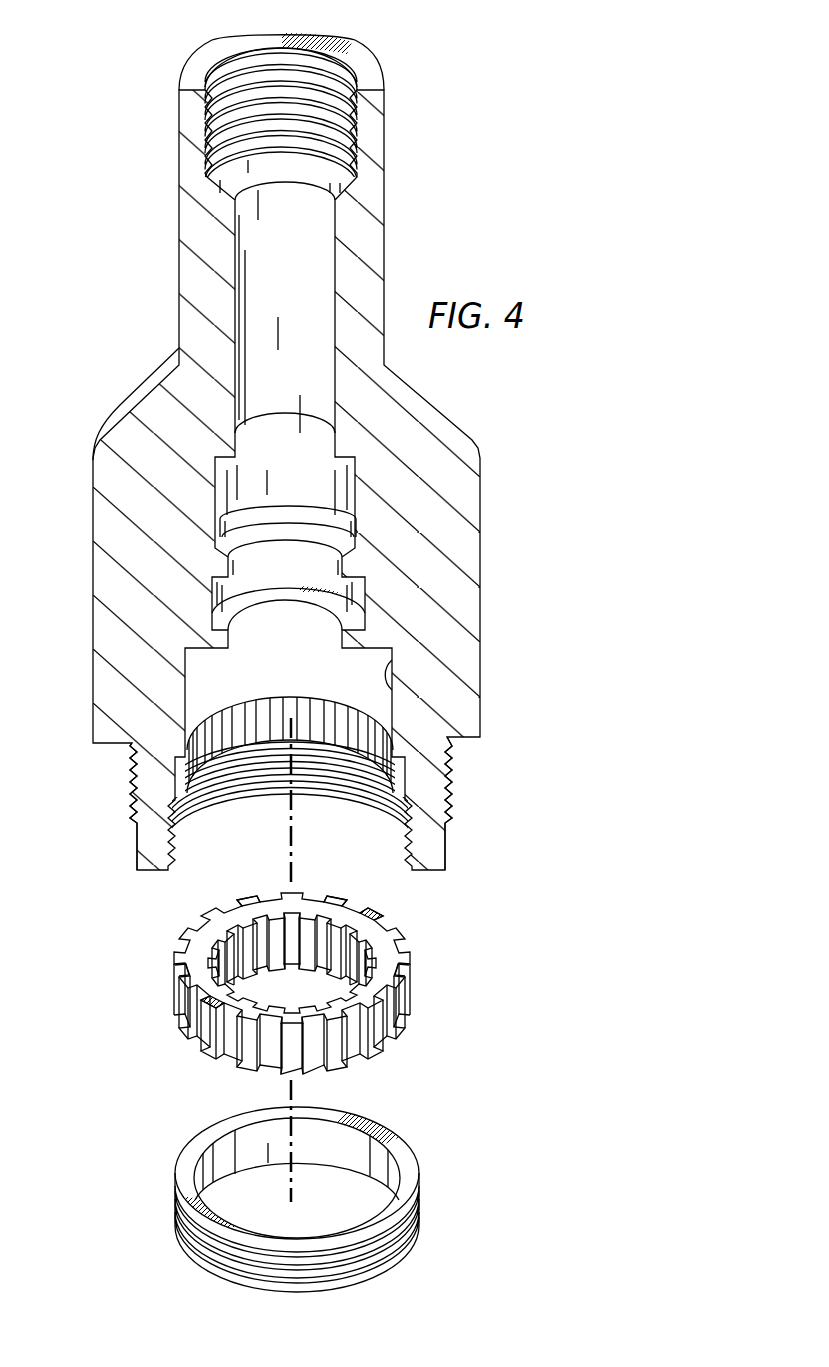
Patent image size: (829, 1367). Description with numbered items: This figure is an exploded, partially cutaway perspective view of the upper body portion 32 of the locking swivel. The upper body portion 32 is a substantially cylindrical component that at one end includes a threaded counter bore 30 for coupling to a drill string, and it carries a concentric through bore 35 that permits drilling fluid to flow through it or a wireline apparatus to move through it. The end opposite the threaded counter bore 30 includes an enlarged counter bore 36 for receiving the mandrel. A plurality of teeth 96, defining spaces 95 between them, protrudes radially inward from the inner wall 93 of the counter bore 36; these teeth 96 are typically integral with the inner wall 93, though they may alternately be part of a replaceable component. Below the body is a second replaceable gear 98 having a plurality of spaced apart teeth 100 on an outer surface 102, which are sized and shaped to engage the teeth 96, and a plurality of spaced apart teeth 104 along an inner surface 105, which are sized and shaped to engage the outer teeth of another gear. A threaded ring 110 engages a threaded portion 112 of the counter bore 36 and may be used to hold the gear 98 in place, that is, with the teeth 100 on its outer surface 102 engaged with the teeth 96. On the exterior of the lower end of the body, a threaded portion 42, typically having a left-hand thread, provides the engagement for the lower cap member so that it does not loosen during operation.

The threaded counter bore 30 is at (220, 73).
The upper body portion 32 is at (92, 344).
The through bore 35 is at (334, 275).
The enlarged counter bore 36 is at (405, 688).
The threaded portion 42 is at (130, 787).
The inner wall 93 is at (280, 627).
The spaces 95 is at (335, 718).
The teeth 96 is at (303, 713).
The second replaceable gear 98 is at (303, 962).
The teeth 100 is at (337, 895).
The outer surface 102 is at (270, 895).
The teeth 104 is at (210, 938).
The inner surface 105 is at (307, 1013).
The threaded ring 110 is at (175, 1208).
The threaded portion 112 is at (193, 818).